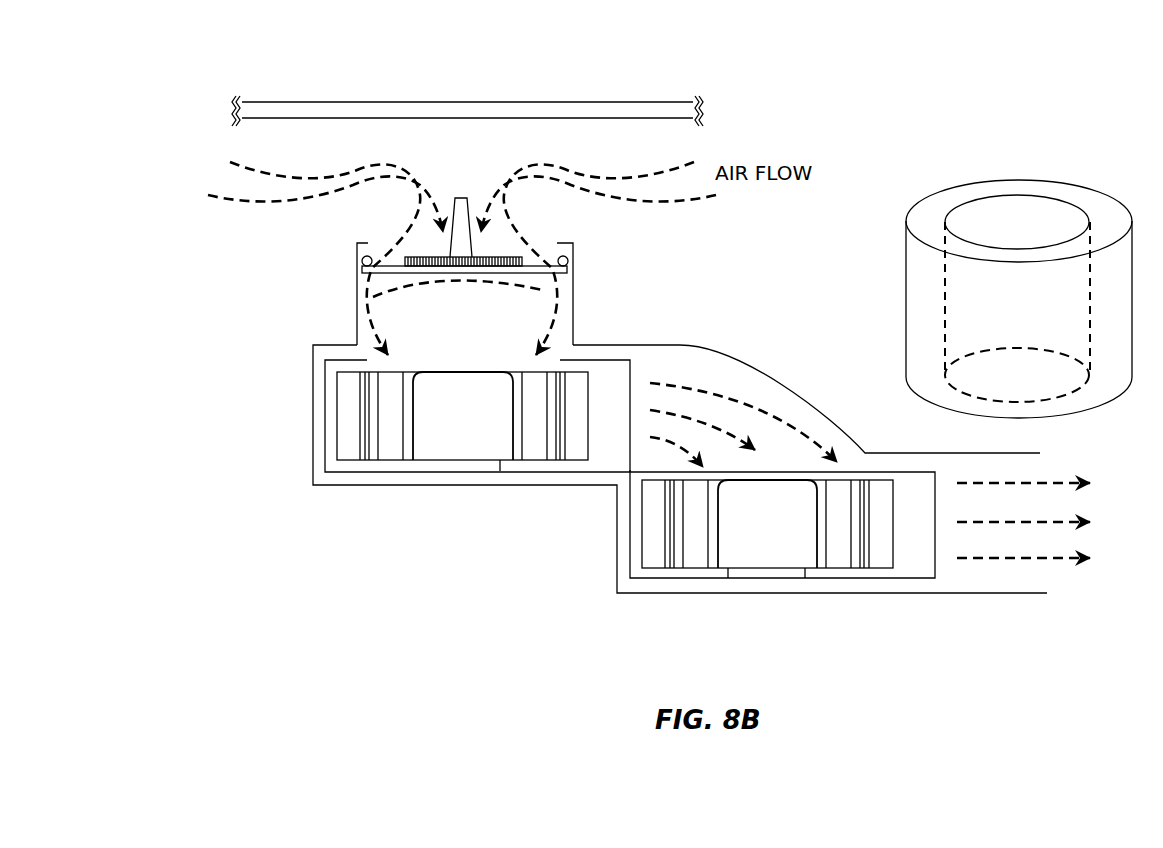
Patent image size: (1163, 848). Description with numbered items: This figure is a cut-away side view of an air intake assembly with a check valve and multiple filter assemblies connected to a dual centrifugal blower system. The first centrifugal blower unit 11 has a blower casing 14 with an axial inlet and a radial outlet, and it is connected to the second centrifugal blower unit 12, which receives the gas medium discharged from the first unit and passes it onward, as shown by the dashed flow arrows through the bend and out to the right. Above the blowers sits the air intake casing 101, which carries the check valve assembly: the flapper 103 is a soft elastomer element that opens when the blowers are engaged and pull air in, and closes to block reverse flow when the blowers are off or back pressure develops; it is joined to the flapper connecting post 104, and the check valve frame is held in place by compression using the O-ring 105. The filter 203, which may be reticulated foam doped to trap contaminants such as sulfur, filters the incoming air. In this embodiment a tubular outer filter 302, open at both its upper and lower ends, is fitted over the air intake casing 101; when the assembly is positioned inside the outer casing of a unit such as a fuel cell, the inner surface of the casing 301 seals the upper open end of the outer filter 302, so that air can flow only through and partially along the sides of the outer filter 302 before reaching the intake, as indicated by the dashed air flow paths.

The first centrifugal blower unit 11 is at (458, 433).
The second centrifugal blower unit 12 is at (765, 532).
The blower casing 14 is at (317, 465).
The air intake casing 101 is at (355, 276).
The flapper 103 is at (387, 271).
The flapper connecting post 104 is at (461, 222).
The O-ring 105 is at (575, 257).
The filter 203 is at (573, 325).
The casing 301 is at (612, 100).
The outer filter 302 is at (927, 223).